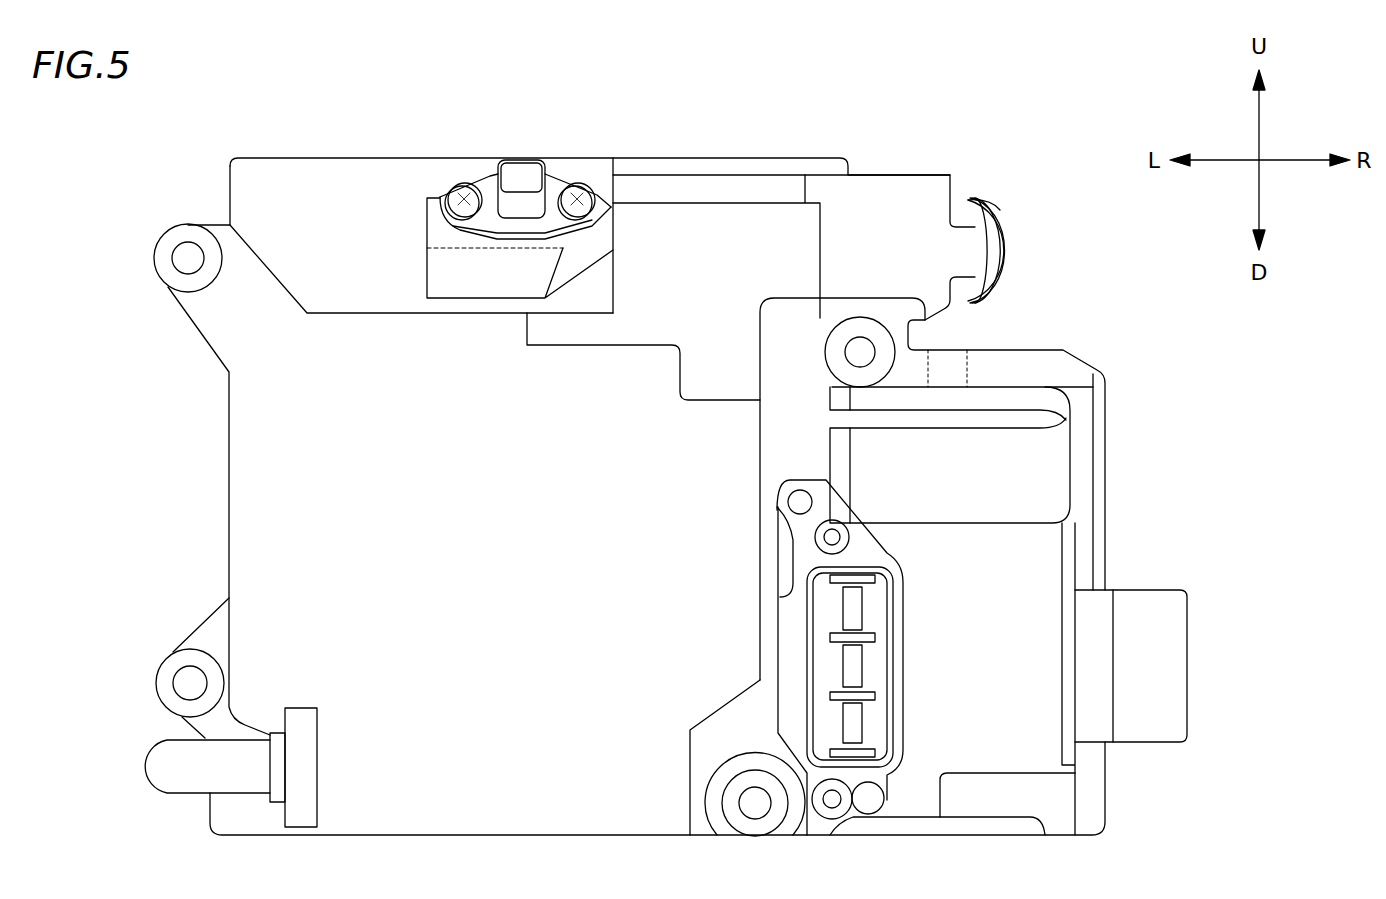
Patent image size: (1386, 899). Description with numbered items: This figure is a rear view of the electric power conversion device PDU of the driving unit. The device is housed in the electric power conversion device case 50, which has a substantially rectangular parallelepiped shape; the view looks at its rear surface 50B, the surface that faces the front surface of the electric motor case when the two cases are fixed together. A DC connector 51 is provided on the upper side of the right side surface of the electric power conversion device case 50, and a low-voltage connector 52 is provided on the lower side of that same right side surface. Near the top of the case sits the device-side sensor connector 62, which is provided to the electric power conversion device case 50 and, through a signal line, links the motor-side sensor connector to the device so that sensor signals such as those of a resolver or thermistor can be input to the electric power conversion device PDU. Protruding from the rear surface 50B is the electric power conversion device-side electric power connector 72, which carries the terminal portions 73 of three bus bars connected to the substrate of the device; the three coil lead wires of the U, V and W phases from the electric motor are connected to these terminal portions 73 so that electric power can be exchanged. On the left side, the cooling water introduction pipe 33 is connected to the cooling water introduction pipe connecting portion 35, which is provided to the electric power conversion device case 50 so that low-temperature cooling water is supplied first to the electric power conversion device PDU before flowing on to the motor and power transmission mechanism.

The electric power conversion device case 50 is at (313, 168).
The rear surface 50B is at (695, 288).
The device-side sensor connector 62 is at (545, 180).
The DC connector 51 is at (988, 198).
The electric power conversion device-side electric power connector 72 is at (900, 636).
The terminal portions 73 is at (843, 730).
The low-voltage connector 52 is at (1175, 665).
The cooling water introduction pipe 33 is at (155, 772).
The cooling water introduction pipe connecting portion 35 is at (280, 803).
The electric power conversion device PDU is at (845, 112).